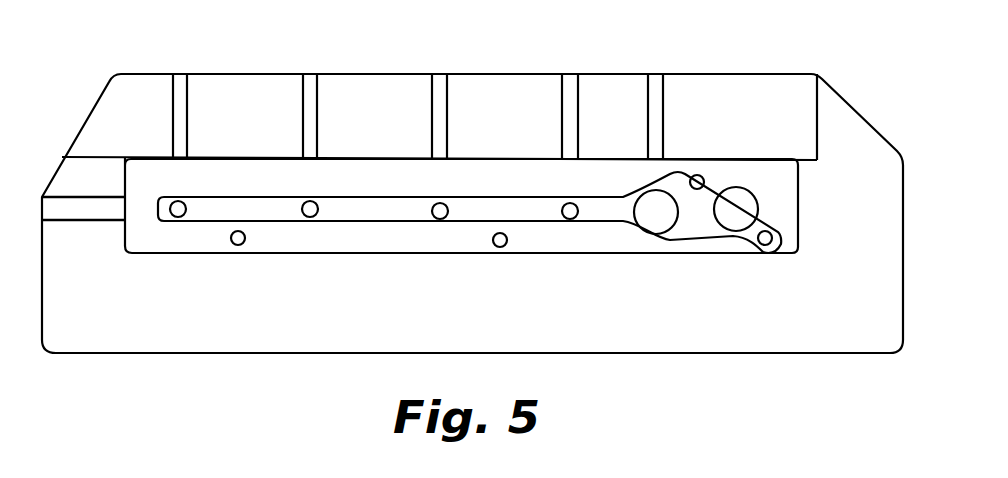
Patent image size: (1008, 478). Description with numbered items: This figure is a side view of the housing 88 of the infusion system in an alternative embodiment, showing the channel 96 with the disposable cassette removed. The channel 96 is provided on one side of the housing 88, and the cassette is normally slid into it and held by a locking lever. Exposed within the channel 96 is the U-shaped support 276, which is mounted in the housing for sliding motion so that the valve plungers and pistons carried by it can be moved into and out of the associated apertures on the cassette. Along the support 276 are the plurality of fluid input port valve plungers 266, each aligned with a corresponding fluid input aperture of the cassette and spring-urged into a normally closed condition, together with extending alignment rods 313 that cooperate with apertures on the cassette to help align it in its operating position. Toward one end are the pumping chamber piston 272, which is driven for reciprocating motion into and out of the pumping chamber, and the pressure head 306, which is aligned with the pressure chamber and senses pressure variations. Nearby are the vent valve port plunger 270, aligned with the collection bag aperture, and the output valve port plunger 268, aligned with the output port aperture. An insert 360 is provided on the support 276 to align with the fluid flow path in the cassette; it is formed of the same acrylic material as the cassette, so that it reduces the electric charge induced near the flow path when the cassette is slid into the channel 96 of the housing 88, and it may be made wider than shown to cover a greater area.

The housing 88 is at (203, 60).
The channel 96 is at (92, 182).
The U-shaped support 276 is at (118, 238).
The insert 360 is at (605, 218).
The fluid input port valve plungers 266 is at (178, 217).
The alignment rods 313 is at (243, 246).
The pumping chamber piston 272 is at (660, 222).
The pressure head 306 is at (733, 218).
The vent valve port plunger 270 is at (697, 176).
The output valve port plunger 268 is at (772, 236).